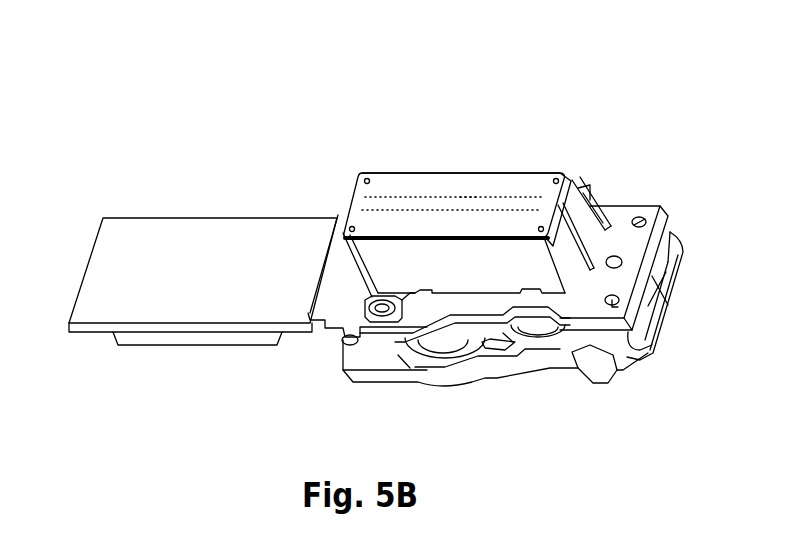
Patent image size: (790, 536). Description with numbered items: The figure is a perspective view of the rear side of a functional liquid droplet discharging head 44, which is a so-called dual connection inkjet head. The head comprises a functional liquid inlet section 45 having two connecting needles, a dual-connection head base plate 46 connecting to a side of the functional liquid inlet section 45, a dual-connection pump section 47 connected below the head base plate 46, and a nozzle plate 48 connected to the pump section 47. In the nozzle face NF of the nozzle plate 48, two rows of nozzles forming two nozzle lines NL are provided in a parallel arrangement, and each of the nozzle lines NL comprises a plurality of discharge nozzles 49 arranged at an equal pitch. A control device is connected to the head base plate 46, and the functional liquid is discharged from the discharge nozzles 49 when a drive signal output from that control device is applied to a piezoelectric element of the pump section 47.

The functional liquid droplet discharging head 44 is at (430, 82).
The functional liquid inlet section 45 is at (470, 384).
The dual-connection head base plate 46 is at (135, 218).
The dual-connection pump section 47 is at (584, 190).
The nozzle plate 48 is at (525, 174).
The discharge nozzles 49 is at (474, 193).
The nozzle face NF is at (420, 180).
The nozzle lines NL is at (345, 213).